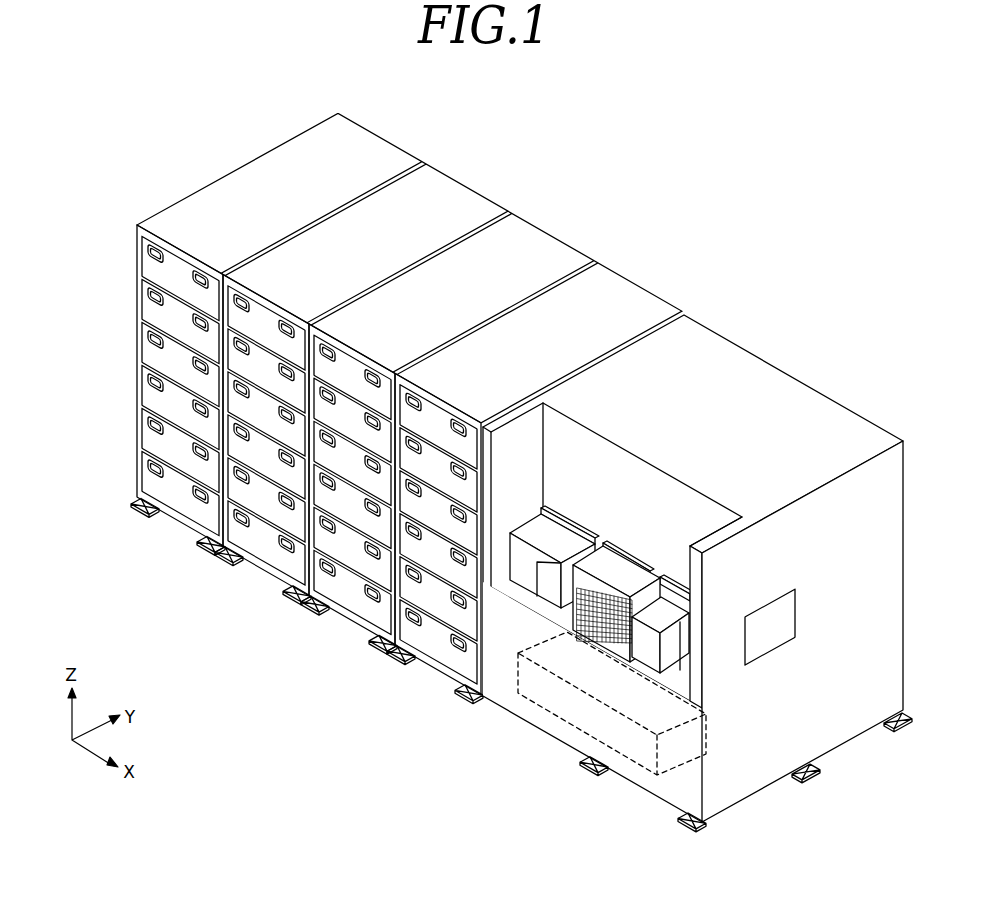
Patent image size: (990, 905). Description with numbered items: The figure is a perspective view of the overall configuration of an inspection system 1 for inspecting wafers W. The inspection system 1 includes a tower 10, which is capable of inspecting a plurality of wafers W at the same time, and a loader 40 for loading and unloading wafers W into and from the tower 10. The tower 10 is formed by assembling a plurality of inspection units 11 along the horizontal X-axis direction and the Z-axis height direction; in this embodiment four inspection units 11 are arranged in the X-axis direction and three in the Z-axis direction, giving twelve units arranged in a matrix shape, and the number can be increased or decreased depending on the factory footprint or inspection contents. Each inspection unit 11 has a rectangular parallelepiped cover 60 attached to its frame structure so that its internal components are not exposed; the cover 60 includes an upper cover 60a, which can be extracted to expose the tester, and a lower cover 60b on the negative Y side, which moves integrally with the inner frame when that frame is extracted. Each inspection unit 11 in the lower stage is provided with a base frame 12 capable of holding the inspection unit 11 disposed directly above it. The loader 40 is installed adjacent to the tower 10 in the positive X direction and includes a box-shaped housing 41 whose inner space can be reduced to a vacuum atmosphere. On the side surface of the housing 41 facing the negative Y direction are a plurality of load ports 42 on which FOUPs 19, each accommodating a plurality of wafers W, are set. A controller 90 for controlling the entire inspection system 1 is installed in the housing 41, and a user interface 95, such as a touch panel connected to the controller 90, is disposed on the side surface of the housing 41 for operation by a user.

The inspection system 1 is at (808, 151).
The tower 10 is at (347, 110).
The inspection unit 11 is at (308, 252).
The base frame 12 is at (181, 509).
The FOUP 19 is at (523, 587).
The loader 40 is at (910, 436).
The housing 41 is at (862, 596).
The load port 42 is at (683, 683).
The cover 60 is at (292, 158).
The upper cover 60a is at (177, 280).
The lower cover 60b is at (177, 315).
The controller 90 is at (681, 742).
The user interface 95 is at (770, 627).
The wafer W is at (597, 643).